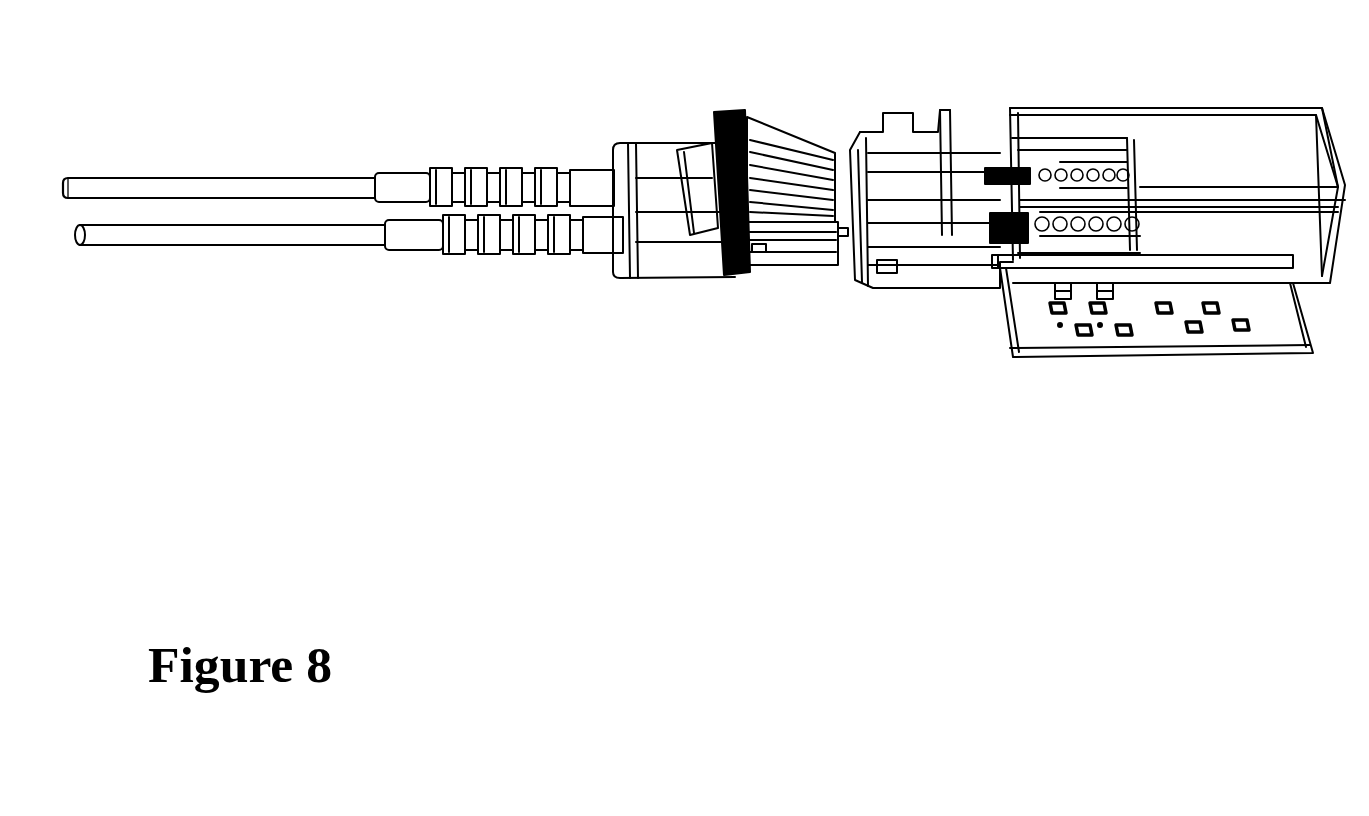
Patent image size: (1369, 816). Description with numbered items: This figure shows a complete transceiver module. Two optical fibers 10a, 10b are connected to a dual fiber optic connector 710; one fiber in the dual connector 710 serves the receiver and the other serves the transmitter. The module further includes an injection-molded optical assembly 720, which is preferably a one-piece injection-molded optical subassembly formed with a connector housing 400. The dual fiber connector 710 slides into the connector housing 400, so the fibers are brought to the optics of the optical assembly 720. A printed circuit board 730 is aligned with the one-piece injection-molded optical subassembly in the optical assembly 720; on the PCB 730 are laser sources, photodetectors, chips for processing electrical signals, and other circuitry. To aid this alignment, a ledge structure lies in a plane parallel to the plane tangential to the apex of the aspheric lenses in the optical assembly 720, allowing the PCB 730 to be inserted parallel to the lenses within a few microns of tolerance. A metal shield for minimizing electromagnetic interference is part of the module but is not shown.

The optical fiber 10a is at (230, 177).
The optical fiber 10b is at (230, 246).
The dual fiber optic connector 710 is at (648, 153).
The connector housing 400 is at (920, 150).
The injection-molded optical assembly 720 is at (1337, 62).
The printed circuit board 730 is at (1017, 320).